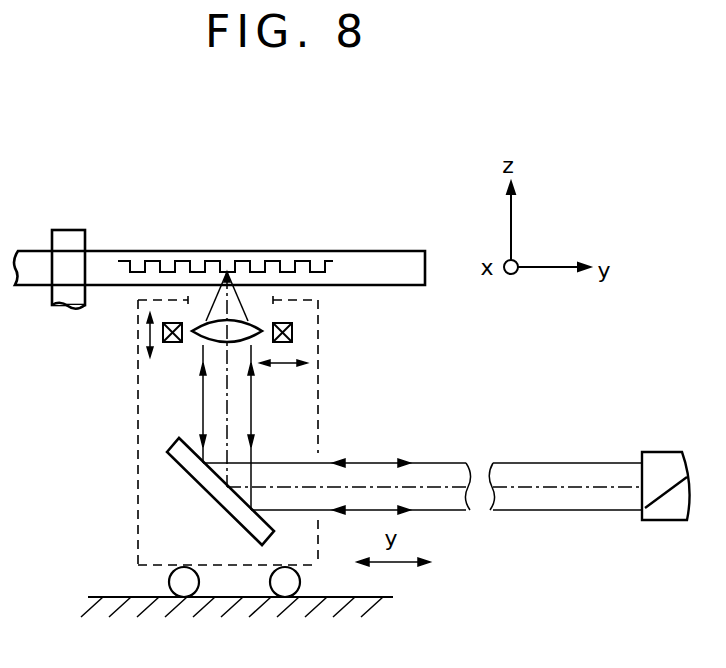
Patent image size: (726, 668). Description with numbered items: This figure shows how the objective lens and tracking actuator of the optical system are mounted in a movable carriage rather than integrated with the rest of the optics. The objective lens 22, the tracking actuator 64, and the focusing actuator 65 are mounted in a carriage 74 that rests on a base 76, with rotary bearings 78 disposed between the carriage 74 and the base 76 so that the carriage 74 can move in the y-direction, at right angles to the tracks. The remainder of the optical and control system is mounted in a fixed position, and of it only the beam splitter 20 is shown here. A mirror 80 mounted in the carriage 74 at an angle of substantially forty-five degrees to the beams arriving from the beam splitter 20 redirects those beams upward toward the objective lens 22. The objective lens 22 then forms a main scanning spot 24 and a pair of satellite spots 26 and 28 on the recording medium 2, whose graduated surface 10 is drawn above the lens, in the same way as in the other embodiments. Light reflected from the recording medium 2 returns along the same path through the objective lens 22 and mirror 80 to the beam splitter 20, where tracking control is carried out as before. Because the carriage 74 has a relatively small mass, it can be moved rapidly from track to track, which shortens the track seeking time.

The recording medium 2 is at (398, 263).
The graduation marks 10 is at (198, 266).
The main scanning spot 24 is at (264, 337).
The satellite spot 26 is at (264, 337).
The satellite spot 28 is at (227, 270).
The beam splitter 20 is at (661, 462).
The objective lens 22 is at (194, 338).
The tracking actuator 64 is at (292, 332).
The focusing actuator 65 is at (165, 322).
The carriage 74 is at (139, 397).
The base 76 is at (105, 597).
The rotary bearings 78 is at (300, 587).
The mirror 80 is at (222, 495).